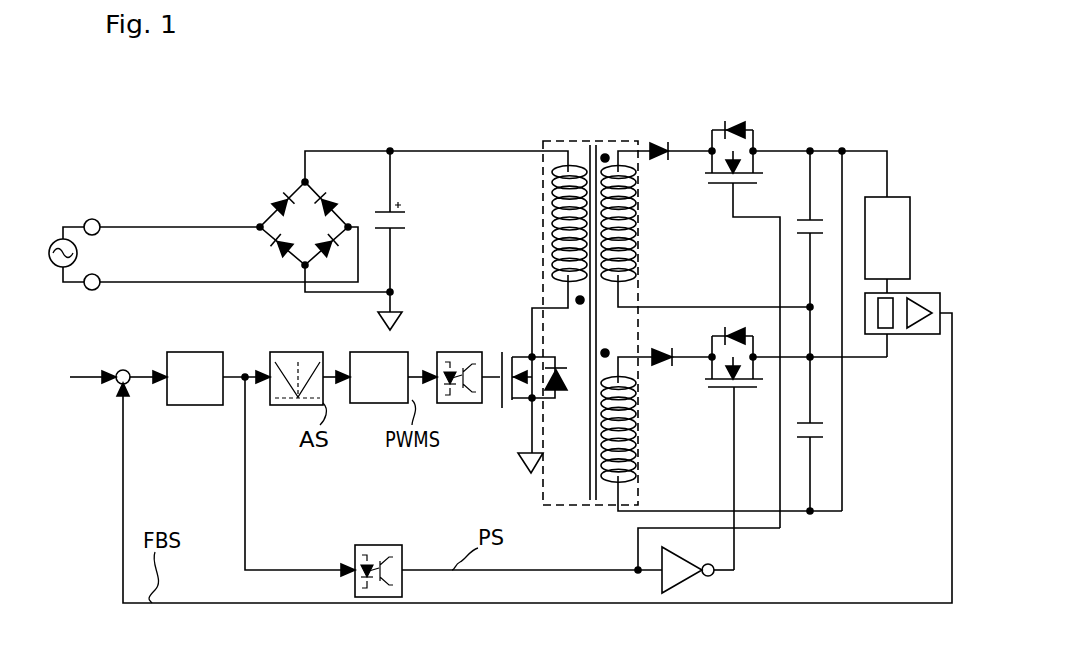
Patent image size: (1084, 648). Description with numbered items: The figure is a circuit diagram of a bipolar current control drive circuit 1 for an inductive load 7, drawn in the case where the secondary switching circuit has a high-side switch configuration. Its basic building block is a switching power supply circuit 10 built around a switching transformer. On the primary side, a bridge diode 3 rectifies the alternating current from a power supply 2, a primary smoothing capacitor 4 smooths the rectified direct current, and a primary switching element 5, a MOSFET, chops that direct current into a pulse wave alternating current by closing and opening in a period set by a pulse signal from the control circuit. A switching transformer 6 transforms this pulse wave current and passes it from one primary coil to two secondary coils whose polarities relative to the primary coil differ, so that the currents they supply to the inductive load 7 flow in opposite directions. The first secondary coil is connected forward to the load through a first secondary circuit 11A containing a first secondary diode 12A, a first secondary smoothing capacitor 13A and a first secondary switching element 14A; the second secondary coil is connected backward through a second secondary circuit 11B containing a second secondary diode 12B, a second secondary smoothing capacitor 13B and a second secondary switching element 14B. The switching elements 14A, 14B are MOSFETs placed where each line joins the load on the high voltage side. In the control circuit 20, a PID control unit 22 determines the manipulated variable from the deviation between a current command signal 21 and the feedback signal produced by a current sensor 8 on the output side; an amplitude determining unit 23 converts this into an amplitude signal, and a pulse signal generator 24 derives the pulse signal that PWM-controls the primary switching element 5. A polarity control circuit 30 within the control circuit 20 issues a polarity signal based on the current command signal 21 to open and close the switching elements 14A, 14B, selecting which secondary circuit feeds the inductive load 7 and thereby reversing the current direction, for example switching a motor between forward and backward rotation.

The bipolar current control drive circuit 1 is at (900, 92).
The power supply 2 is at (55, 248).
The bridge diode 3 is at (300, 183).
The primary smoothing capacitor 4 is at (405, 218).
The primary switching element 5 is at (532, 353).
The switching transformer 6 is at (597, 282).
The inductive load 7 is at (912, 218).
The current sensor 8 is at (926, 293).
The switching power supply circuit 10 is at (302, 147).
The first secondary circuit 11A is at (776, 130).
The second secondary circuit 11B is at (804, 519).
The first secondary diode 12A is at (655, 147).
The second secondary diode 12B is at (665, 368).
The first secondary smoothing capacitor 13A is at (815, 218).
The second secondary smoothing capacitor 13B is at (819, 429).
The first secondary switching element 14A is at (740, 130).
The second secondary switching element 14B is at (725, 389).
The control circuit 20 is at (118, 350).
The current command signal 21 is at (80, 377).
The PID control unit 22 is at (175, 352).
The amplitude determining unit 23 is at (298, 352).
The pulse signal generator 24 is at (378, 355).
The polarity control circuit 30 is at (344, 545).